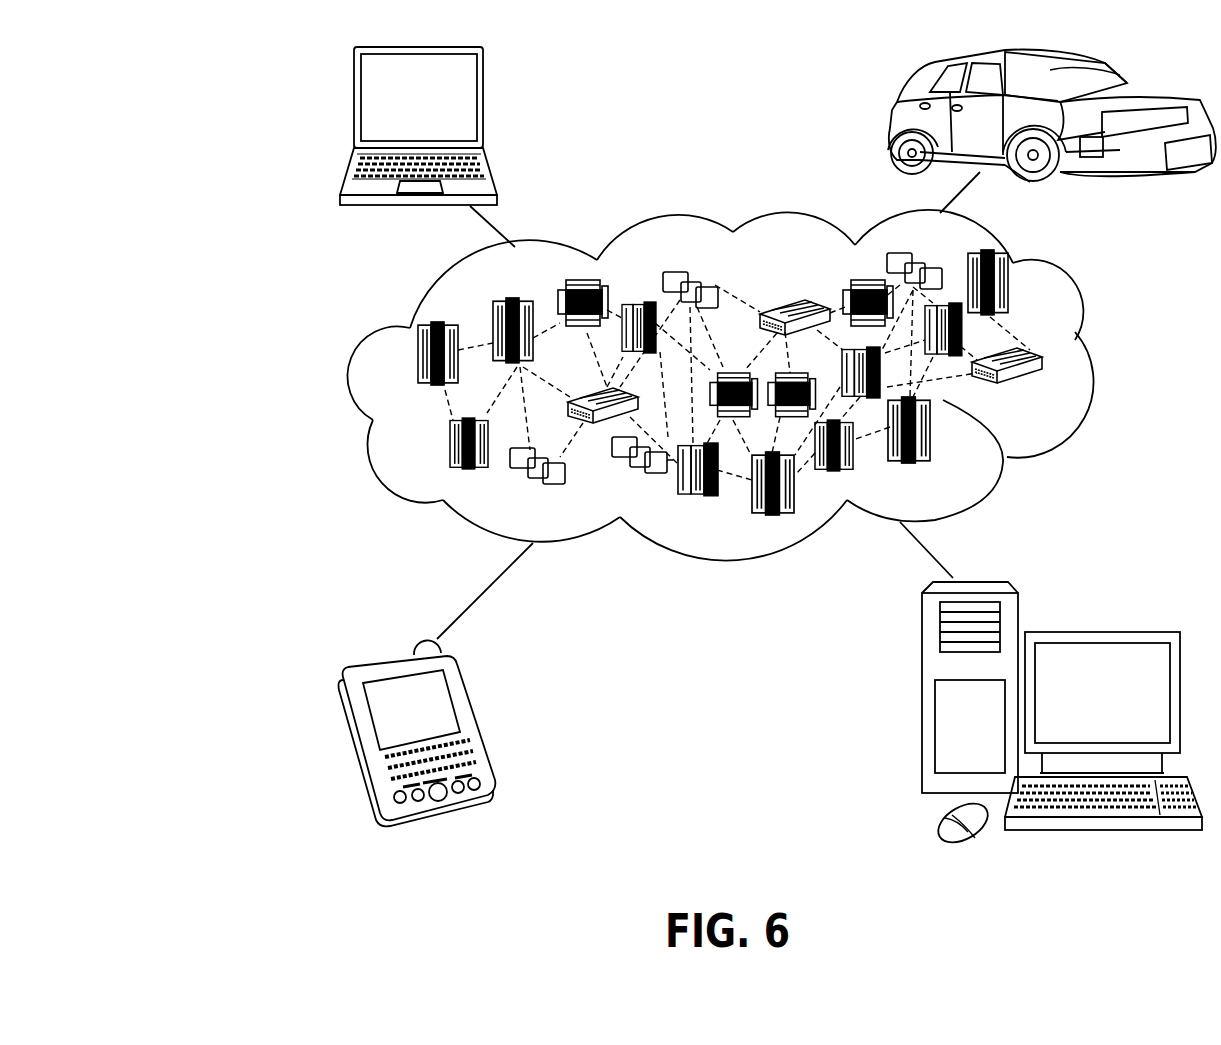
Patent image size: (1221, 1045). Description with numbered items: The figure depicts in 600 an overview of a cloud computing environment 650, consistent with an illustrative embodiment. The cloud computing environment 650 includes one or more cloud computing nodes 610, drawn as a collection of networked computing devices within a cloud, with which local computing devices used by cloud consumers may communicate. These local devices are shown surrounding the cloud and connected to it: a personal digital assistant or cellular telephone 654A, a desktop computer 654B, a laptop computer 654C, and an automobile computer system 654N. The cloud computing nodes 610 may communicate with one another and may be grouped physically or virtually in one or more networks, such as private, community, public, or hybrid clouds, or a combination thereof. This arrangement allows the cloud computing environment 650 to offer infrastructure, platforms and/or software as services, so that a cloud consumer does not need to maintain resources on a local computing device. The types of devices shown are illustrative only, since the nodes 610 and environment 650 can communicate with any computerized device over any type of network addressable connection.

The overview of cloud computing environment 600 is at (199, 70).
The cloud computing nodes 610 is at (1045, 392).
The cloud computing environment 650 is at (1102, 363).
The personal digital assistant (PDA) or cellular telephone 654A is at (473, 720).
The desktop computer 654B is at (1100, 633).
The laptop computer 654C is at (484, 112).
The automobile computer system 654N is at (892, 125).